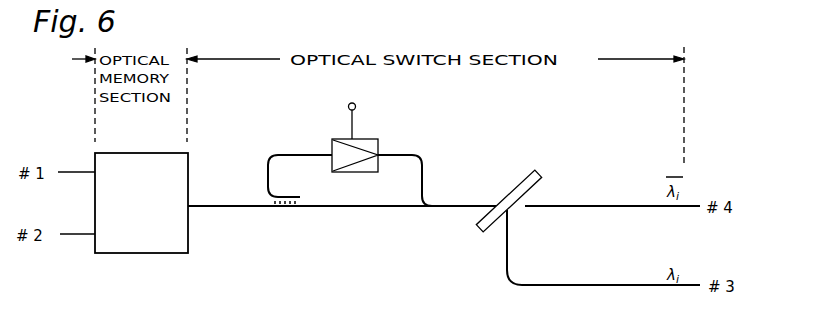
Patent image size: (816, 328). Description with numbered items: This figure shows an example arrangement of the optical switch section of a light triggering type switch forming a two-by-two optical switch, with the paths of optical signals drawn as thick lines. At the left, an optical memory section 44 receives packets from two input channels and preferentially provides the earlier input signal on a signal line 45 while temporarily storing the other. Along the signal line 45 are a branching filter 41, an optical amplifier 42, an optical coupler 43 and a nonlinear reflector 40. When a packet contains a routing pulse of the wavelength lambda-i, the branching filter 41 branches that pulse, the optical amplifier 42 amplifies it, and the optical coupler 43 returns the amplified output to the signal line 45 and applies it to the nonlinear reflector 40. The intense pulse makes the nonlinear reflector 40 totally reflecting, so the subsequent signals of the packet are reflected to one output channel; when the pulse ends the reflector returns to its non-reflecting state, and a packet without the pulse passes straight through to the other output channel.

The nonlinear reflector 40 is at (502, 177).
The branching filter 41 is at (284, 213).
The optical amplifier 42 is at (378, 139).
The optical coupler 43 is at (432, 213).
The optical memory section 44 is at (149, 153).
The signal line 45 is at (221, 213).